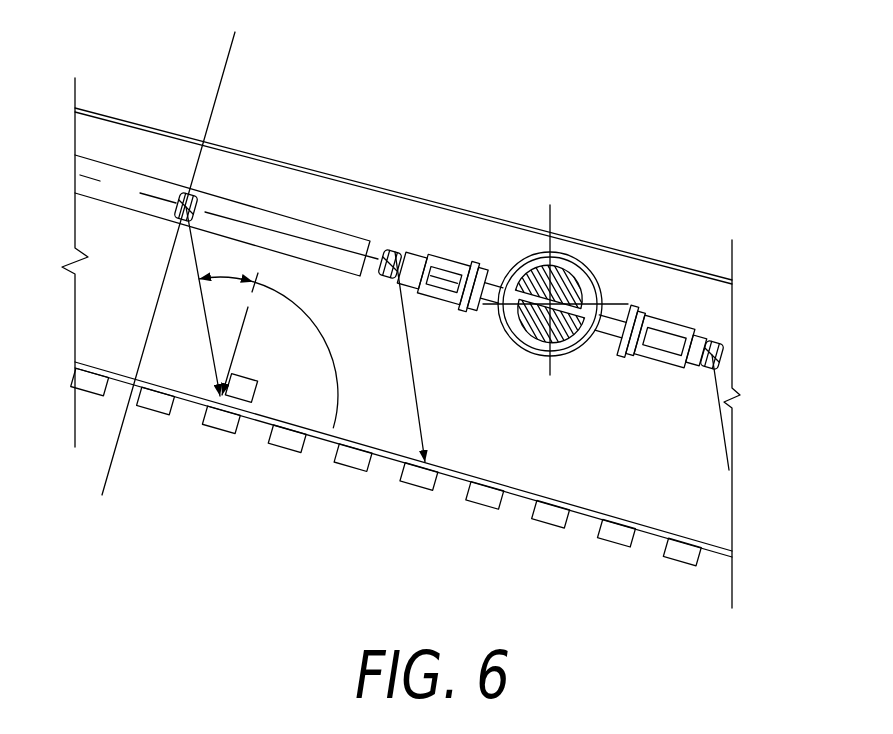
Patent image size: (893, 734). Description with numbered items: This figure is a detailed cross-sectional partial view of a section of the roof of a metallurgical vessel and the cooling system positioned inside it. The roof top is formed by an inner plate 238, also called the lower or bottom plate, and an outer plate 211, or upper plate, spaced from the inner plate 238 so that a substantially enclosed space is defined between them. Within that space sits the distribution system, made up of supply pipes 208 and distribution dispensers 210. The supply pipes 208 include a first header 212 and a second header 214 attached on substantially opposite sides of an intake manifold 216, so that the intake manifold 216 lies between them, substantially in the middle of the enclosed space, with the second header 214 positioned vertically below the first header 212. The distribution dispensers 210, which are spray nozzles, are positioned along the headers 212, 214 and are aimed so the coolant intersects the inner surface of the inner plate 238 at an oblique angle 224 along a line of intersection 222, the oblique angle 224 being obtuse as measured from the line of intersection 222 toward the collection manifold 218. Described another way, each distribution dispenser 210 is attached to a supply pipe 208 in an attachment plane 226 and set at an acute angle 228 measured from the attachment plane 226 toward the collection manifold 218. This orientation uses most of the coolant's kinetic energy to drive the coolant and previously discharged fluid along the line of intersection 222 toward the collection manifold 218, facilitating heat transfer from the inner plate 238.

The supply pipes 208 is at (489, 250).
The distribution dispensers 210 is at (202, 203).
The outer plate 211 is at (432, 202).
The first header 212 is at (90, 157).
The second header 214 is at (660, 313).
The intake manifold 216 is at (593, 278).
The collection manifold 218 is at (722, 641).
The line of intersection 222 is at (205, 343).
The oblique angle 224 is at (325, 373).
The attachment plane 226 is at (110, 470).
The acute angle 228 is at (178, 262).
The inner plate 238 is at (583, 517).